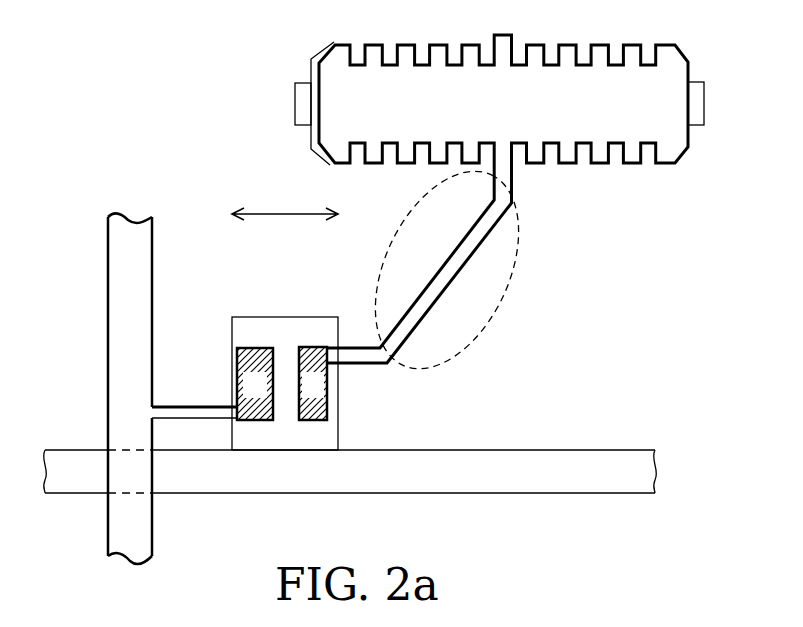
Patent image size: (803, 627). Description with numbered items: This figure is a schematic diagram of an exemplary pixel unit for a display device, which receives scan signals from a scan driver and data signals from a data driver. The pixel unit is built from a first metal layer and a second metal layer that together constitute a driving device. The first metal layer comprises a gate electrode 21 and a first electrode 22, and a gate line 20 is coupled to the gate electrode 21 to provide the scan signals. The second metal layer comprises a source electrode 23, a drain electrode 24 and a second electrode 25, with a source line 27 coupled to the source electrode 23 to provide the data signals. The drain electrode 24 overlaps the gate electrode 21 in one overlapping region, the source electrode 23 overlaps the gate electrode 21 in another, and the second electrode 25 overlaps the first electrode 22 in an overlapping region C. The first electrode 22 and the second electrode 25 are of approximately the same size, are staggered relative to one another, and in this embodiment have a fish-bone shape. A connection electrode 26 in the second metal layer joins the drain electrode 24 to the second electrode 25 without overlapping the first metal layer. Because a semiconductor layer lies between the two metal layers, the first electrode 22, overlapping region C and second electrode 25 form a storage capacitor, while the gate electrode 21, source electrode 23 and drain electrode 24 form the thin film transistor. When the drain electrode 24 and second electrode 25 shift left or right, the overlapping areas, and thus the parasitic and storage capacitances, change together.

The overlapping region C is at (652, 108).
The first electrode 22 is at (697, 126).
The second electrode 25 is at (665, 164).
The connection electrode 26 is at (505, 272).
The gate electrode 21 is at (282, 317).
The source electrode 23 is at (255, 348).
The drain electrode 24 is at (330, 402).
The gate line 20 is at (588, 472).
The source line 27 is at (127, 530).